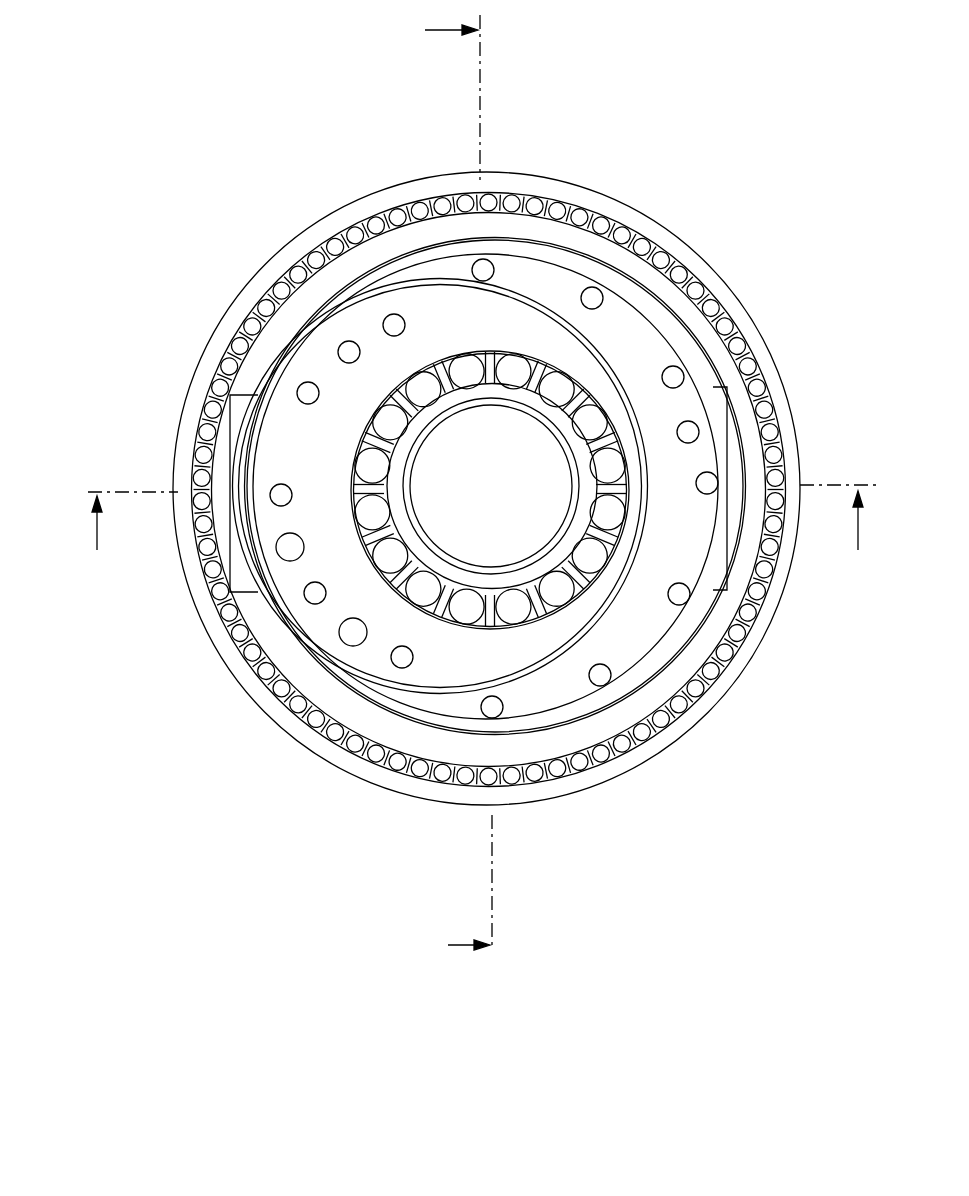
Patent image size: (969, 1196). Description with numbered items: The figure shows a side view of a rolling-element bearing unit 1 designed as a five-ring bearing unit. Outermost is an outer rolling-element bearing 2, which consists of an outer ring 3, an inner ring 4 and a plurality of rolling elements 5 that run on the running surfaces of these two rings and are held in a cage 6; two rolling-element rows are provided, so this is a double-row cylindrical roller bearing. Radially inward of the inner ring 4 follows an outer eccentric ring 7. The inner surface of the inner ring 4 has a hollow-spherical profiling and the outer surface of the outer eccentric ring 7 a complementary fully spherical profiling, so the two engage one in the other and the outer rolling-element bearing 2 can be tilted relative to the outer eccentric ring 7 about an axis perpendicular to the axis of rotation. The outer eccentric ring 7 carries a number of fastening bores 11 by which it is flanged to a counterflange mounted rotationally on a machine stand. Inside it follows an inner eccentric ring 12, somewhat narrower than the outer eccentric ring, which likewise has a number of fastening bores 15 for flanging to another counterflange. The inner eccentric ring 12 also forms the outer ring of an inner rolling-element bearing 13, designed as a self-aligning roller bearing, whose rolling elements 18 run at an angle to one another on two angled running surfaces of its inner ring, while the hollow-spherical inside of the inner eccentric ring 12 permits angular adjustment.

The rolling-element bearing unit 1 is at (476, 530).
The outer rolling-element bearing 2 is at (534, 495).
The outer ring 3 is at (486, 447).
The inner ring 4 is at (489, 429).
The rolling elements 5 is at (750, 372).
The cage 6 is at (534, 534).
The outer eccentric ring 7 is at (521, 500).
The fastening bores 11 is at (677, 593).
The inner eccentric ring 12 is at (256, 723).
The inner rolling-element bearing 13 is at (349, 508).
The fastening bores 15 is at (390, 327).
The rolling elements 18 is at (595, 560).